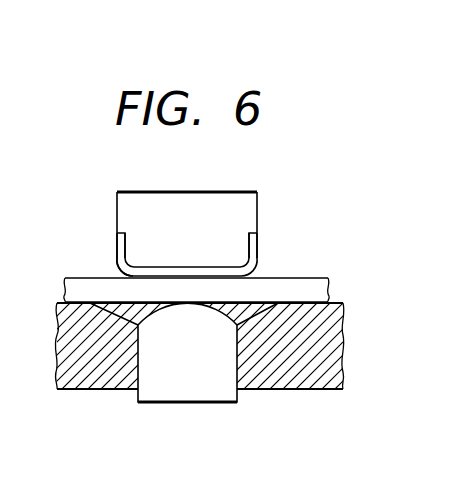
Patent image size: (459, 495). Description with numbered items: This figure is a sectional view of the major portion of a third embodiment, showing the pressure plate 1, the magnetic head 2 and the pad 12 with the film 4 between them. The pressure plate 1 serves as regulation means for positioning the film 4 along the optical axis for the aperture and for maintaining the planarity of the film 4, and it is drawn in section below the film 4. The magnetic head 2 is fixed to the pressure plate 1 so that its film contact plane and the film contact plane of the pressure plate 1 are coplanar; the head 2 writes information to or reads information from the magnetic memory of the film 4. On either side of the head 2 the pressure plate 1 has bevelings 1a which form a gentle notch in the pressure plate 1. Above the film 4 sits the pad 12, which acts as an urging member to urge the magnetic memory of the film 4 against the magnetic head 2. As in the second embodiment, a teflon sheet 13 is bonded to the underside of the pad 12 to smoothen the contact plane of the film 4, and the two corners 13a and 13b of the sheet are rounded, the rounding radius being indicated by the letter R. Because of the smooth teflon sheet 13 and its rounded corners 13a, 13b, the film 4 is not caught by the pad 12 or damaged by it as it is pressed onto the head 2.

The pressure plate 1 is at (323, 373).
The bevelings 1a is at (118, 313).
The magnetic head 2 is at (165, 392).
The film 4 is at (318, 283).
The pad 12 is at (228, 210).
The teflon sheet 13 is at (257, 240).
The corner of the teflon sheet 13a is at (118, 258).
The corner of the teflon sheet 13b is at (255, 266).
The bend radius R is at (127, 265).